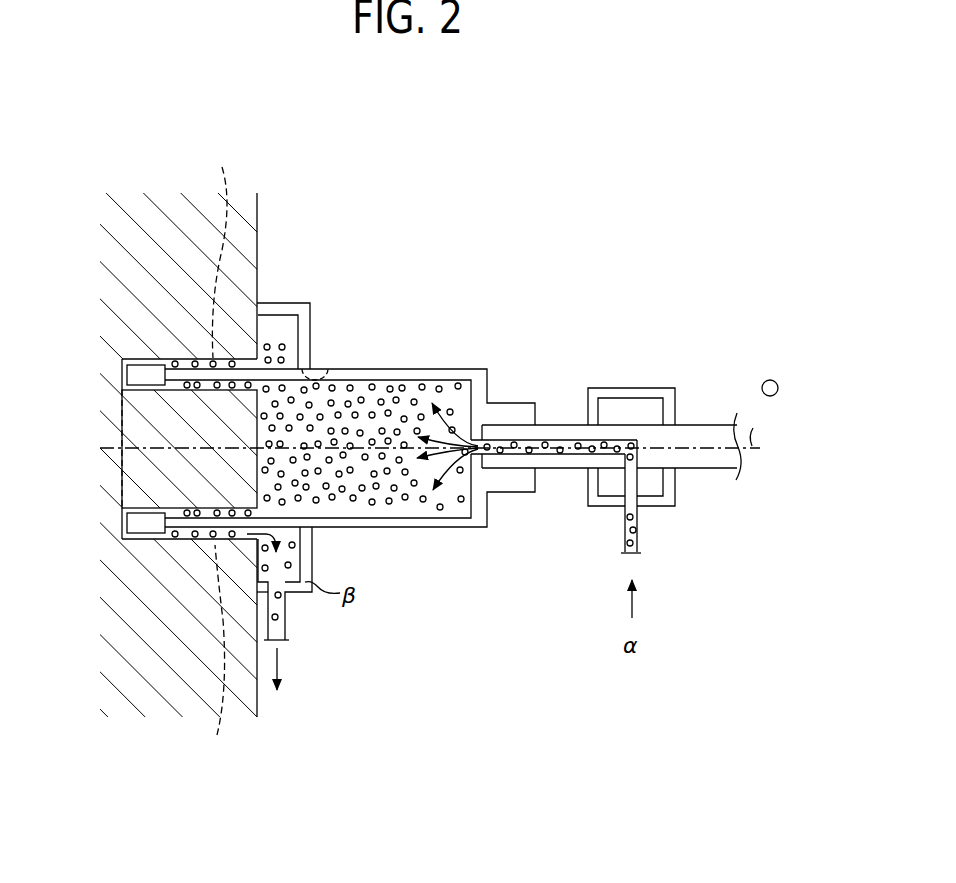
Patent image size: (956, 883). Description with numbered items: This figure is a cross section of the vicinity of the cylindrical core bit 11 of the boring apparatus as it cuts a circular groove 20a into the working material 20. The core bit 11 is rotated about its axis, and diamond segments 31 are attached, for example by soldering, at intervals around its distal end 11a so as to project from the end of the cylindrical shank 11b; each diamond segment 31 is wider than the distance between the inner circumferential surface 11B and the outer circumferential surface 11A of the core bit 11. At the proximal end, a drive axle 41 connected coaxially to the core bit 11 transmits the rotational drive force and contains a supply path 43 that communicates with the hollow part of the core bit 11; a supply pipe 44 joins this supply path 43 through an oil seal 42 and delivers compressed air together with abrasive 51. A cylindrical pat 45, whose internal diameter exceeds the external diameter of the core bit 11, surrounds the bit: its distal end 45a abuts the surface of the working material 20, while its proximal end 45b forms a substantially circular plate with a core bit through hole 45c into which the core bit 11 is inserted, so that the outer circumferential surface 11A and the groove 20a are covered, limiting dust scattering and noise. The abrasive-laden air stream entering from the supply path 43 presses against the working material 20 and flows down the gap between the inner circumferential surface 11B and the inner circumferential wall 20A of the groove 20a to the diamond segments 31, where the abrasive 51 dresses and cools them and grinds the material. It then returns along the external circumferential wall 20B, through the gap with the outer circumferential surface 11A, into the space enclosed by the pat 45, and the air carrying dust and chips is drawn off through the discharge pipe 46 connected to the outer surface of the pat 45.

The working material 20 is at (257, 207).
The inner circumferential wall 20A is at (223, 250).
The external circumferential wall 20B is at (217, 656).
The circular groove 20a is at (177, 503).
The cylindrical core bit 11 is at (288, 454).
The outer circumferential surface 11A is at (182, 545).
The inner circumferential surface 11B is at (177, 362).
The distal end 11a is at (167, 527).
The cylindrical shank 11b is at (407, 368).
The diamond segments 31 is at (125, 372).
The drive axle 41 is at (567, 425).
The oil seal 42 is at (650, 387).
The supply path 43 is at (556, 455).
The supply pipe 44 is at (638, 525).
The cylindrical pat 45 is at (324, 308).
The distal end 45a is at (257, 308).
The proximal end 45b is at (312, 322).
The core bit through hole 45c is at (312, 368).
The discharge pipe 46 is at (288, 628).
The abrasive 51 is at (300, 527).